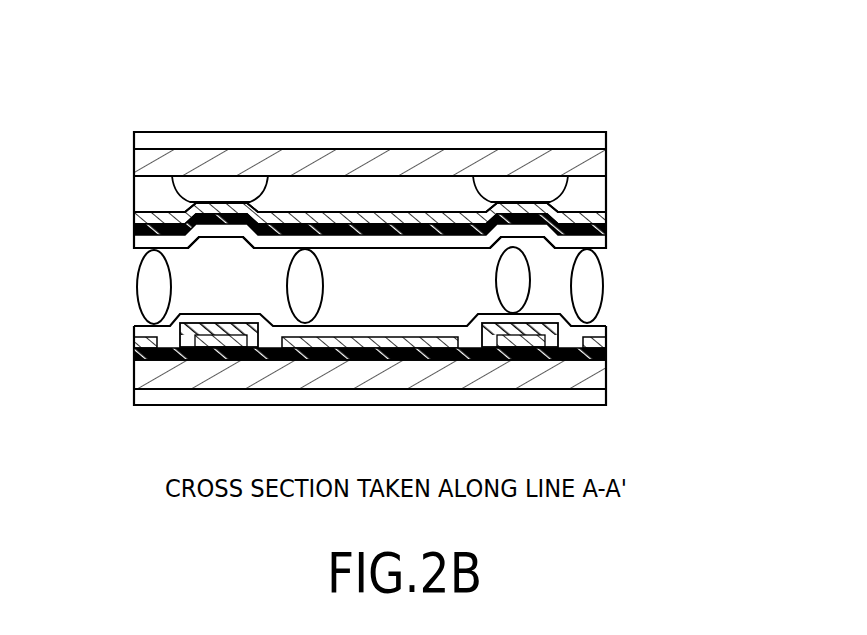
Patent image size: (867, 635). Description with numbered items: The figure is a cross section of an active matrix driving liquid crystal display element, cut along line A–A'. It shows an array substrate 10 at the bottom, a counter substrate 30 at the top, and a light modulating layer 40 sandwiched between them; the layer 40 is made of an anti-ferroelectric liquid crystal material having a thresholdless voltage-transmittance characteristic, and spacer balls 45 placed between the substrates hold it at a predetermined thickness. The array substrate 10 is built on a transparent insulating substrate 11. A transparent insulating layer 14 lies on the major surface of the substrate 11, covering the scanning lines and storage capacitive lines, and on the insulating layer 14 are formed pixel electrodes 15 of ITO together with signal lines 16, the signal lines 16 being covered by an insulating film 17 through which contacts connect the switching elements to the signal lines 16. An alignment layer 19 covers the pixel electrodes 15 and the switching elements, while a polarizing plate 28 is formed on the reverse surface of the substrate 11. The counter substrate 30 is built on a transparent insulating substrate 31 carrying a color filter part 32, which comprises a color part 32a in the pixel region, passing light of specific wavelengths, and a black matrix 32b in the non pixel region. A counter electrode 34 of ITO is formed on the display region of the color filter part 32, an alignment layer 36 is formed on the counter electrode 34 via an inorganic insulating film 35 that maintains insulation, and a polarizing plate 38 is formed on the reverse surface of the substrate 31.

The array substrate 10 is at (403, 375).
The transparent insulating substrate 11 is at (600, 375).
The transparent insulating layer 14 is at (134, 354).
The pixel electrode 15 is at (363, 343).
The signal line 16 is at (512, 342).
The insulating film 17 is at (557, 328).
The alignment layer 19 is at (606, 328).
The polarizing plate 28 is at (134, 402).
The counter substrate 30 is at (416, 145).
The transparent insulating substrate 31 is at (607, 156).
The color filter part 32 is at (370, 108).
The color part 32a is at (383, 188).
The black matrix 32b is at (520, 142).
The counter electrode 34 is at (606, 220).
The inorganic insulating film 35 is at (607, 233).
The alignment layer 36 is at (401, 245).
The polarizing plate 38 is at (134, 138).
The light modulating layer 40 is at (338, 302).
The spacer ball 45 is at (139, 294).